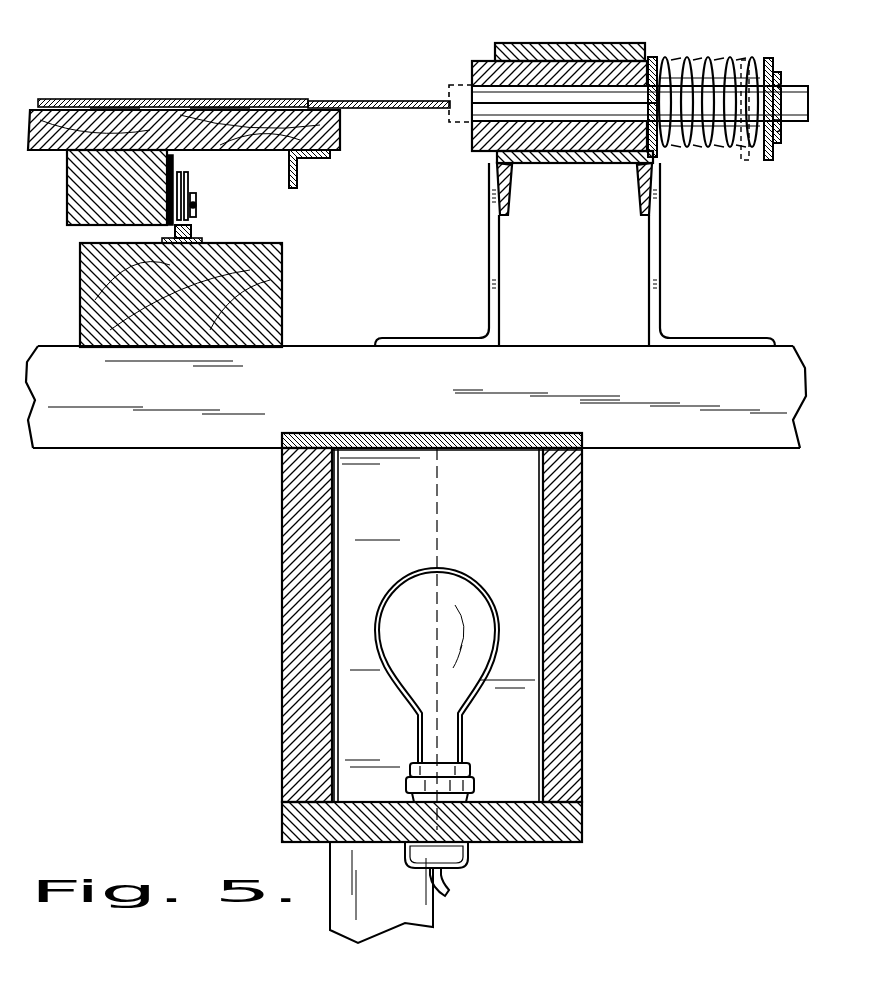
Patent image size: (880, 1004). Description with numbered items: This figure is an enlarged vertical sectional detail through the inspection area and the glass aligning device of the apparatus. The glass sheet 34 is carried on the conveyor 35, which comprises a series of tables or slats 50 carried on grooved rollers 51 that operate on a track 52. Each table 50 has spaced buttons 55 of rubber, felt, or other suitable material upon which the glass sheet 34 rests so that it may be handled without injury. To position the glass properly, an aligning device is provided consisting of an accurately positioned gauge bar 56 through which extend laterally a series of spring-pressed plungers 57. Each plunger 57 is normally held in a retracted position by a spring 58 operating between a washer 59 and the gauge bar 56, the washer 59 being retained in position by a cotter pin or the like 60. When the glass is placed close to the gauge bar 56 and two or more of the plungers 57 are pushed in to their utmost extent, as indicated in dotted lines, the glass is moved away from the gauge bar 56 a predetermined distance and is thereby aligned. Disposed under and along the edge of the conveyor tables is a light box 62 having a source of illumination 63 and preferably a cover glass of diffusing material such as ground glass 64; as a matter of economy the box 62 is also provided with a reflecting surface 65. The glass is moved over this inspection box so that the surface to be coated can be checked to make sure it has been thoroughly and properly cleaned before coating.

The glass sheet 34 is at (350, 91).
The conveyor 35 is at (342, 132).
The table 50 is at (232, 120).
The grooved roller 51 is at (190, 236).
The track 52 is at (170, 238).
The button 55 is at (144, 99).
The gauge bar 56 is at (590, 44).
The spring-pressed plunger 57 is at (460, 85).
The spring 58 is at (704, 68).
The washer 59 is at (768, 58).
The cotter pin 60 is at (778, 136).
The light box 62 is at (576, 552).
The source of illumination 63 is at (468, 597).
The ground glass 64 is at (404, 433).
The reflecting surface 65 is at (335, 552).